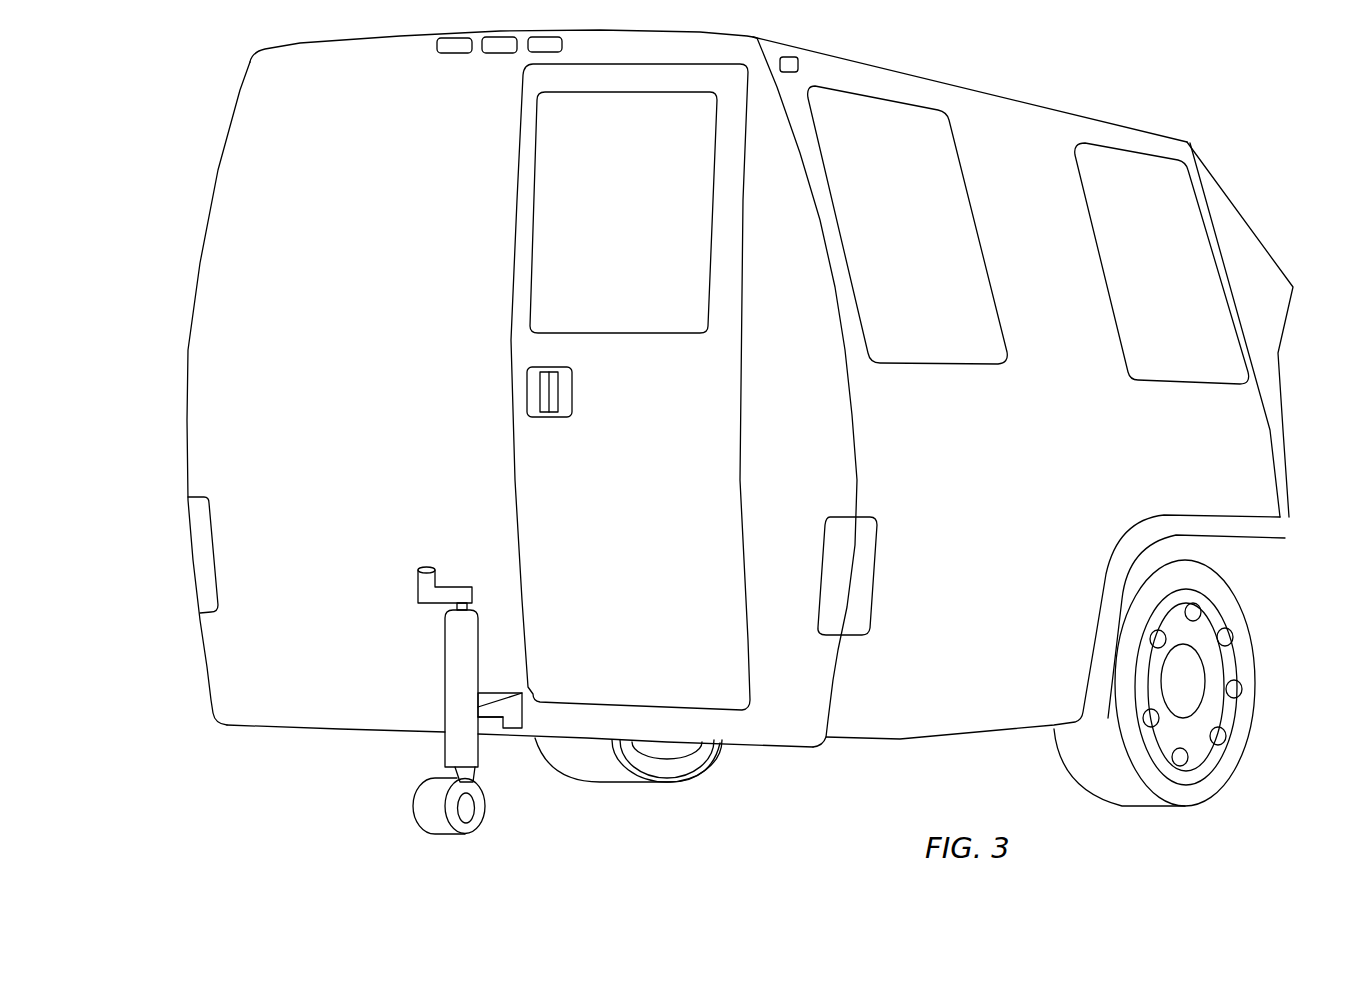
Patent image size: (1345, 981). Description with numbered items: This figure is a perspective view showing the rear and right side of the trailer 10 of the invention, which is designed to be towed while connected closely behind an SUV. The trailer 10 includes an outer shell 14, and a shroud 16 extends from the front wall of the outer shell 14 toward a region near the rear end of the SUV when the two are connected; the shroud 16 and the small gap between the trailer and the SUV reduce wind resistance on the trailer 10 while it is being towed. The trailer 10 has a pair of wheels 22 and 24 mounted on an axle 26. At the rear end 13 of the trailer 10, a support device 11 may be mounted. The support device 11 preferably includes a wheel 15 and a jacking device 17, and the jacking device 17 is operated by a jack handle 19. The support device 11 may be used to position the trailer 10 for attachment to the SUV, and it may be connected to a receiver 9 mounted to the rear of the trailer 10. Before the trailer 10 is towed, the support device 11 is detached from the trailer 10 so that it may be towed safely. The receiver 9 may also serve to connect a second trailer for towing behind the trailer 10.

The receiver 9 is at (490, 697).
The trailer 10 is at (215, 758).
The support device 11 is at (350, 761).
The rear end 13 is at (498, 738).
The outer shell 14 is at (912, 739).
The wheel 15 is at (413, 817).
The shroud 16 is at (1247, 218).
The jacking device 17 is at (445, 675).
The jack handle 19 is at (418, 588).
The wheel 22 is at (608, 782).
The wheel 24 is at (1122, 808).
The axle 26 is at (1183, 727).